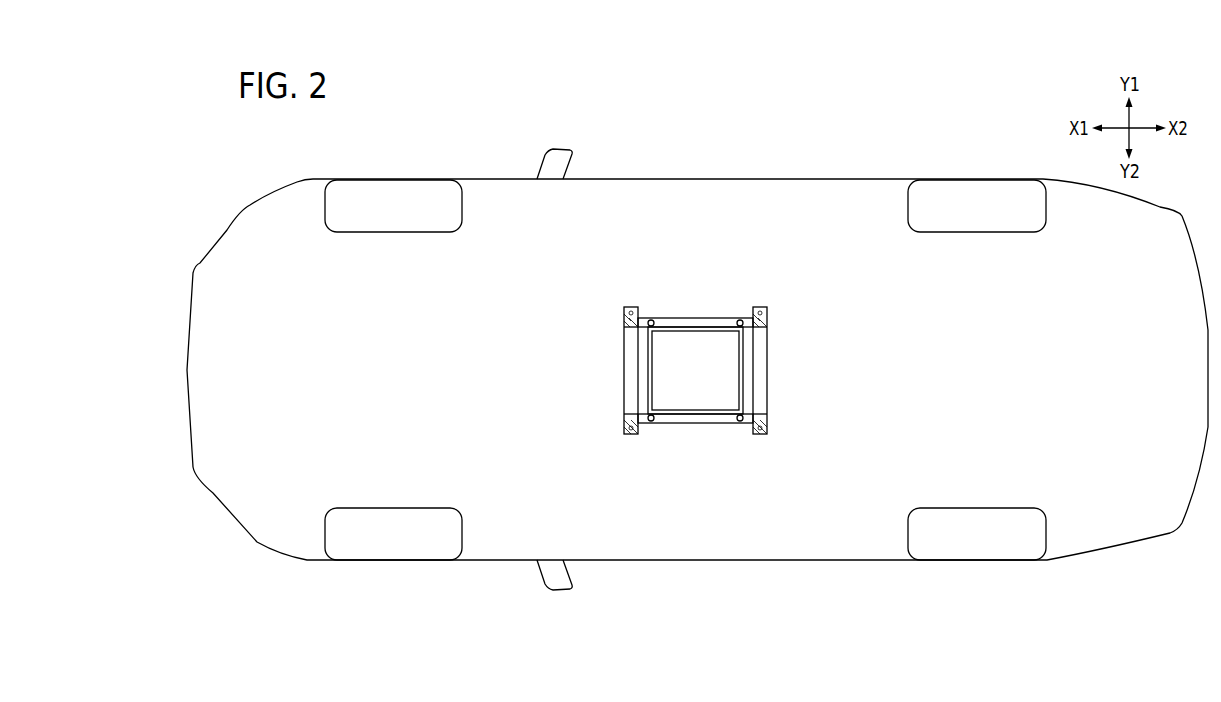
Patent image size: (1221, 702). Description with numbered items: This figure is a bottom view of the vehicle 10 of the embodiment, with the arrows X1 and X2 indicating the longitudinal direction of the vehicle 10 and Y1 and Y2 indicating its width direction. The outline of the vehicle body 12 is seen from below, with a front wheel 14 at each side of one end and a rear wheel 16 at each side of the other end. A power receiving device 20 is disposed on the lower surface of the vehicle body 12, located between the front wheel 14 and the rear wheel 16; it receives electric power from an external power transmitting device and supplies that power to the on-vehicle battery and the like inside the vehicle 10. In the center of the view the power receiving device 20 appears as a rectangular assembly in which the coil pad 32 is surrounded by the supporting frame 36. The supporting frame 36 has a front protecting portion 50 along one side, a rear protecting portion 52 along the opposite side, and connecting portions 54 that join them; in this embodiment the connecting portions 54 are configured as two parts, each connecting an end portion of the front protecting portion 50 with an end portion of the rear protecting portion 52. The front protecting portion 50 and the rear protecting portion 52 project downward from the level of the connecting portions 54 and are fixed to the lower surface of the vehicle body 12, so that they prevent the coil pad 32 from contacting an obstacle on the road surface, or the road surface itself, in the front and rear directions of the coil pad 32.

The vehicle 10 is at (874, 109).
The vehicle body 12 is at (763, 198).
The front wheel 14 is at (386, 190).
The rear wheel 16 is at (963, 190).
The power receiving device 20 is at (667, 304).
The coil pad 32 is at (696, 395).
The supporting frame 36 is at (774, 353).
The front protecting portion 50 is at (630, 362).
The rear protecting portion 52 is at (762, 380).
The connecting portion 54 is at (699, 318).